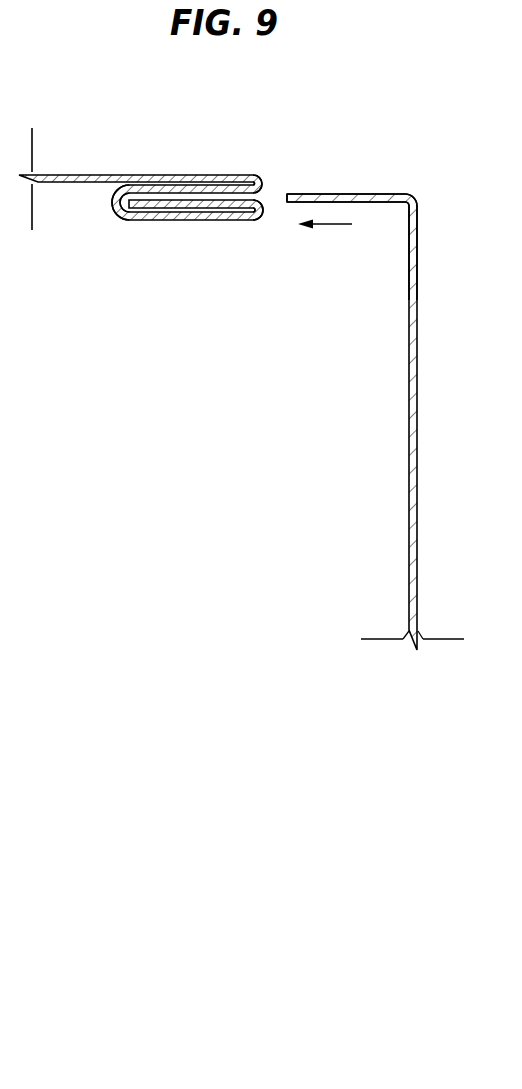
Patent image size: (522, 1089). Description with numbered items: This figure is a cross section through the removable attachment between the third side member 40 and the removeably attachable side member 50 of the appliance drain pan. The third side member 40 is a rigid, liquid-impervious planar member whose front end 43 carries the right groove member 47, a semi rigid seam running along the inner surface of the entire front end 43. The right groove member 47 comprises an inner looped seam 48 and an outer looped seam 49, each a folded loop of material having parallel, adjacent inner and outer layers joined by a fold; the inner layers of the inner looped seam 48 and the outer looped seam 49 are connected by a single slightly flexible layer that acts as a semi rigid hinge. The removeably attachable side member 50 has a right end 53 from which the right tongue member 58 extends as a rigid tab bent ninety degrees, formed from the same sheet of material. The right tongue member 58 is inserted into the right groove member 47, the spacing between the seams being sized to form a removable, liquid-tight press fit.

The third side member 40 is at (141, 171).
The front end 43 is at (150, 176).
The right groove member 47 is at (127, 198).
The inner looped seam 48 is at (255, 221).
The outer looped seam 49 is at (258, 176).
The removeably attachable side member 50 is at (418, 490).
The right end 53 is at (418, 243).
The right tongue member 58 is at (352, 194).